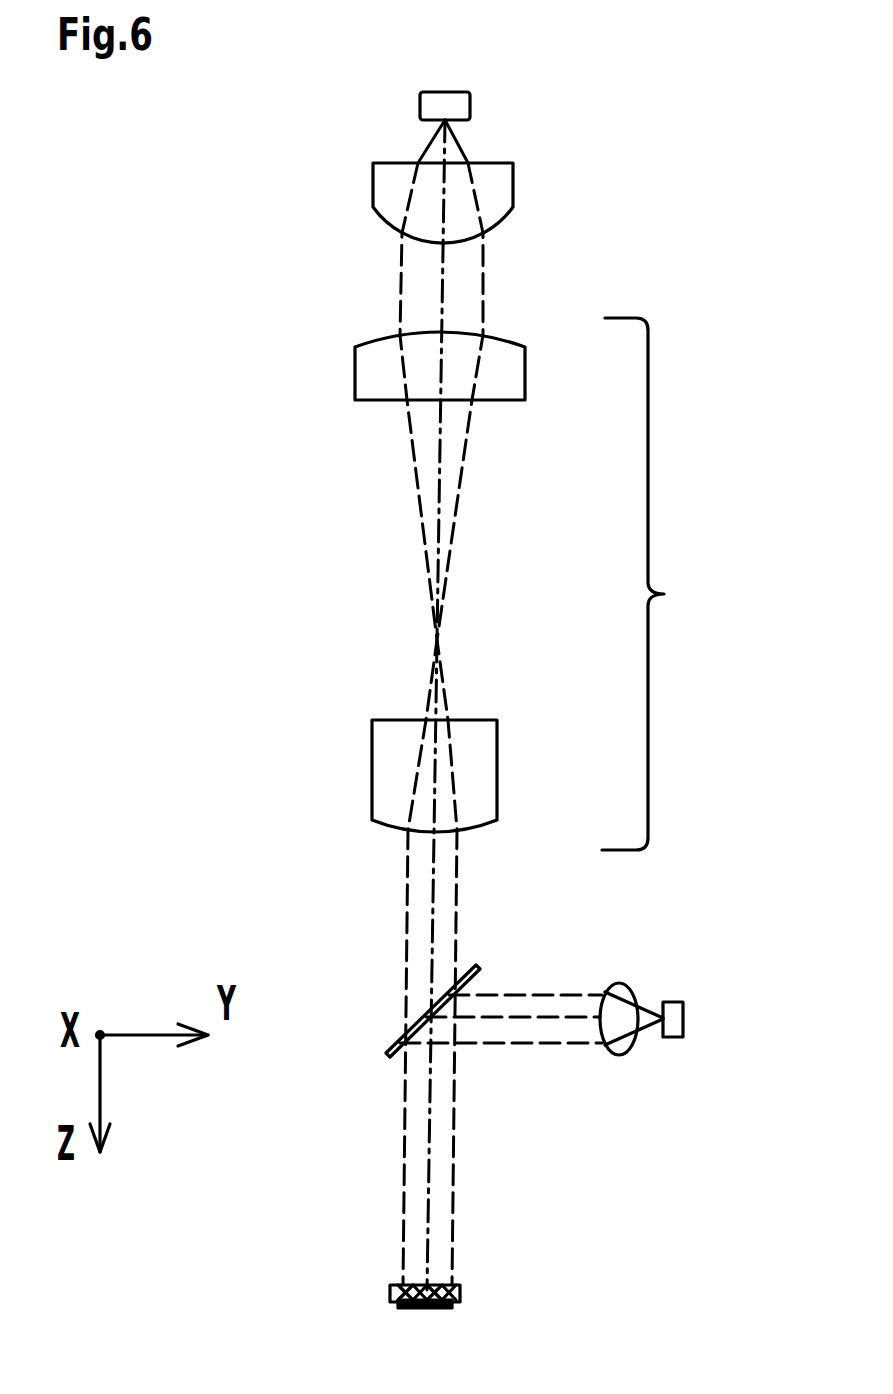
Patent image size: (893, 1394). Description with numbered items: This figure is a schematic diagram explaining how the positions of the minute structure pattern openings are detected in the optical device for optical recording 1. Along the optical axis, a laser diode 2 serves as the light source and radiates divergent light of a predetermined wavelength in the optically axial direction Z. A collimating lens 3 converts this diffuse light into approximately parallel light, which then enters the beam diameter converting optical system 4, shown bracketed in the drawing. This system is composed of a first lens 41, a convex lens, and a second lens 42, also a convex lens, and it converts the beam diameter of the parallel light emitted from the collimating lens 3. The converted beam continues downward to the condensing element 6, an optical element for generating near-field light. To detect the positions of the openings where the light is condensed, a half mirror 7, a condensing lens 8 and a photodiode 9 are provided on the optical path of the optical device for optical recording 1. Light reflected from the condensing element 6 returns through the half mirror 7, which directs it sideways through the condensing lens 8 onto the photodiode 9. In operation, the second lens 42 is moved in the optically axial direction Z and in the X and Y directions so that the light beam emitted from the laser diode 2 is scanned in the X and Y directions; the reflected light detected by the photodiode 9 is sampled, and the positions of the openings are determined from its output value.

The optical device for optical recording 1 is at (753, 193).
The laser diode 2 is at (470, 107).
The collimating lens 3 is at (513, 190).
The beam diameter converting optical system 4 is at (648, 584).
The first lens 41 is at (355, 377).
The second lens 42 is at (372, 783).
The condensing element 6 is at (462, 1292).
The half mirror 7 is at (478, 967).
The condensing lens 8 is at (616, 985).
The photodiode 9 is at (684, 1014).